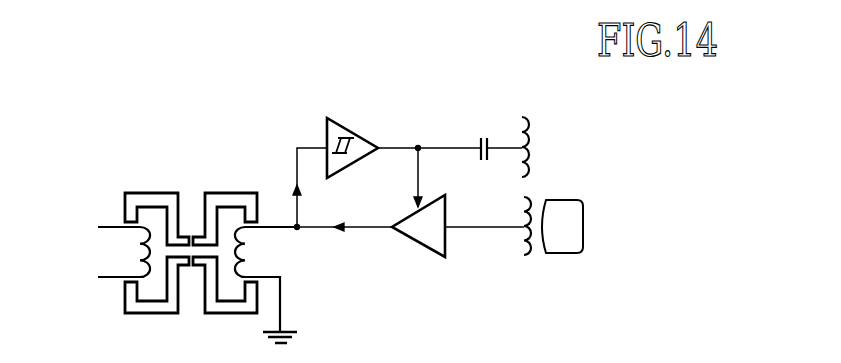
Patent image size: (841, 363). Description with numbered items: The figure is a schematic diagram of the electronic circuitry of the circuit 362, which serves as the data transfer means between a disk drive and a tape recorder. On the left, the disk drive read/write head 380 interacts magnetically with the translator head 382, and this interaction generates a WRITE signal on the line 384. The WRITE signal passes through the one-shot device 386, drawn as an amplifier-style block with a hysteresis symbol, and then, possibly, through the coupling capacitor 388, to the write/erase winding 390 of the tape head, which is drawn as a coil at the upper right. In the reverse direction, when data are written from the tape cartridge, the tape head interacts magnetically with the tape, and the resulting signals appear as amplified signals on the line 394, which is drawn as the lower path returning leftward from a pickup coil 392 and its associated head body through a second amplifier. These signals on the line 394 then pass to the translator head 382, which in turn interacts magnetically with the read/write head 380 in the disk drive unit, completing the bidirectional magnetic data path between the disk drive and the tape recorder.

The circuit 362 is at (445, 290).
The disk drive read/write head 380 is at (143, 193).
The translator head 382 is at (245, 193).
The line 384 is at (306, 148).
The one-shot device 386 is at (340, 116).
The coupling capacitor 388 is at (487, 137).
The write/erase winding 390 is at (532, 132).
The pickup coil with core 392 is at (550, 254).
The line 394 is at (368, 228).